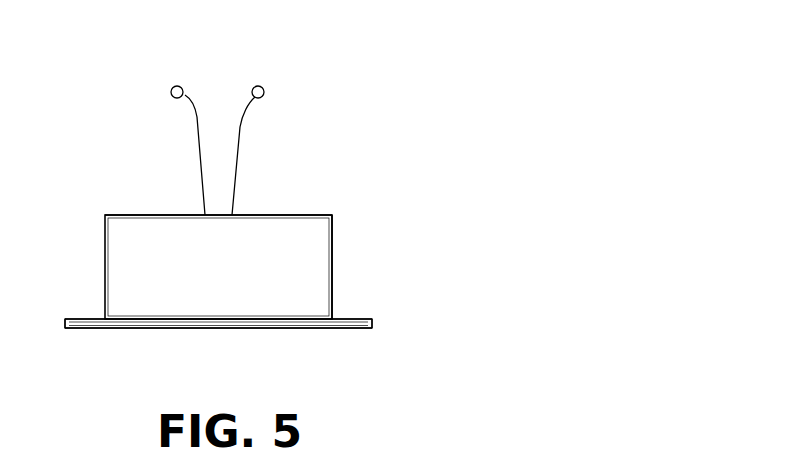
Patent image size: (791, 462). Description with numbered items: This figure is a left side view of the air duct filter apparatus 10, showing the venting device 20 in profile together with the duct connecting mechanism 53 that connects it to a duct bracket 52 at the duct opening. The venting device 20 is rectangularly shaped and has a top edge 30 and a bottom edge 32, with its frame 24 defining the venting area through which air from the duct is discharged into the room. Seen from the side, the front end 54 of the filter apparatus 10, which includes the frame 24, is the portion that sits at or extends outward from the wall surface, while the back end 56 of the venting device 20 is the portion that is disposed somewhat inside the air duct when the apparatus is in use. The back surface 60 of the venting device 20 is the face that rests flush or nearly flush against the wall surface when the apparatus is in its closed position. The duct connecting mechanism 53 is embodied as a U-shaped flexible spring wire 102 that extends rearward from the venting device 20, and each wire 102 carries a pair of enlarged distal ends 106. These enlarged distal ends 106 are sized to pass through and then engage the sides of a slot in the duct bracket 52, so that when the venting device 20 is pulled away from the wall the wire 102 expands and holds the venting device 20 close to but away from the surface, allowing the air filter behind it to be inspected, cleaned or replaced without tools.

The filter apparatus 10 is at (378, 167).
The venting device 20 is at (292, 332).
The frame 24 is at (143, 328).
The top edge 30 is at (58, 314).
The bottom edge 32 is at (372, 337).
The duct bracket 52 is at (248, 242).
The duct connecting mechanism 53 is at (190, 150).
The front end 54 is at (383, 330).
The back end 56 is at (343, 215).
The back surface 60 is at (353, 315).
The flexible spring wire 102 is at (240, 130).
The enlarged distal ends 106 is at (160, 90).